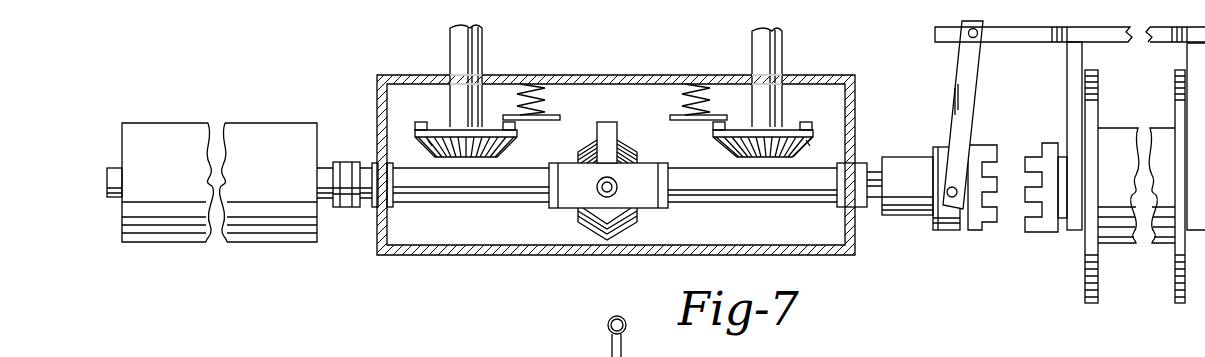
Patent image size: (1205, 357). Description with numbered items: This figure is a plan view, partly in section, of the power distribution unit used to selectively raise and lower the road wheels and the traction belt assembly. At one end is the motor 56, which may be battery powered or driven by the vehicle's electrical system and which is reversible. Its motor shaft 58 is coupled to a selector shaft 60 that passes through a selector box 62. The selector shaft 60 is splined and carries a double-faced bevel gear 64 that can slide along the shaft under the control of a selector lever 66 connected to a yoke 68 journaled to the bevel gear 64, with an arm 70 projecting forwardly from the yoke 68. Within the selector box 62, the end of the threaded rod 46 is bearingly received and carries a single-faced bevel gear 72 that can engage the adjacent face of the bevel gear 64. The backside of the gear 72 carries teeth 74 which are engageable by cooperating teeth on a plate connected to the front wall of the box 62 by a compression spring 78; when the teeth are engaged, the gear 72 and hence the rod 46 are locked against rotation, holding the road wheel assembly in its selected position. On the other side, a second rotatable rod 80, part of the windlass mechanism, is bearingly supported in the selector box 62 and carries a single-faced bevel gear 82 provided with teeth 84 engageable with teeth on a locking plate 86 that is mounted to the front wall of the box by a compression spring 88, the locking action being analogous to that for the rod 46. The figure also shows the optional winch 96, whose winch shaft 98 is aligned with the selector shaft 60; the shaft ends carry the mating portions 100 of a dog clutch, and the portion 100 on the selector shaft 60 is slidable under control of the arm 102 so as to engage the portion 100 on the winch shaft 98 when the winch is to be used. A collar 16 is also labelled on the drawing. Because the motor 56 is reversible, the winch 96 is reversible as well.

The collar 16 is at (718, 117).
The threaded rod 46 is at (762, 48).
The motor 56 is at (265, 143).
The motor shaft 58 is at (327, 177).
The selector shaft 60 is at (435, 180).
The selector box 62 is at (805, 256).
The double-faced bevel gear 64 is at (627, 140).
The selector lever 66 is at (598, 187).
The yoke 68 is at (570, 193).
The arm 70 is at (607, 130).
The single-faced bevel gear 72 is at (810, 143).
The teeth 74 is at (803, 123).
The compression spring 78 is at (676, 97).
The second rotatable rod 80 is at (452, 60).
The single-faced bevel gear 82 is at (430, 145).
The teeth 84 is at (420, 122).
The locking plate 86 is at (555, 115).
The compression spring 88 is at (510, 113).
The winch 96 is at (1117, 138).
The winch shaft 98 is at (1082, 210).
The mating portions of dog clutch 100 is at (1023, 223).
The arm 102 is at (972, 93).